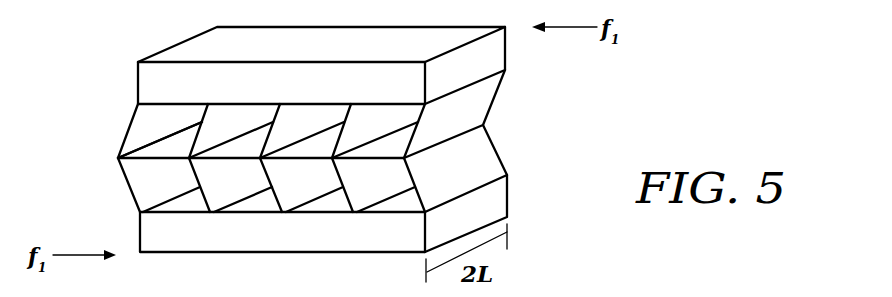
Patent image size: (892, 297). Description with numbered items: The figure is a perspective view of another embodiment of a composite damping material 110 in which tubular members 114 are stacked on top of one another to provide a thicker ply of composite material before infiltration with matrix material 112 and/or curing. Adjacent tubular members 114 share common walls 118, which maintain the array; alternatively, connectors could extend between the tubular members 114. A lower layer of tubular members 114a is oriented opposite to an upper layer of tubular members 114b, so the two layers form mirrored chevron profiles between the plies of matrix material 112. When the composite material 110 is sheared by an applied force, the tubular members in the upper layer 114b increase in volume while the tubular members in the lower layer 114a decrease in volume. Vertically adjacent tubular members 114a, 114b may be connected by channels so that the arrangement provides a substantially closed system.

The composite material 110 is at (603, 116).
The matrix material 112 is at (510, 50).
The tubular members 114 is at (503, 147).
The lower layer of tubular members 114a is at (131, 192).
The upper layer of tubular members 114b is at (119, 155).
The common walls 118 is at (202, 120).